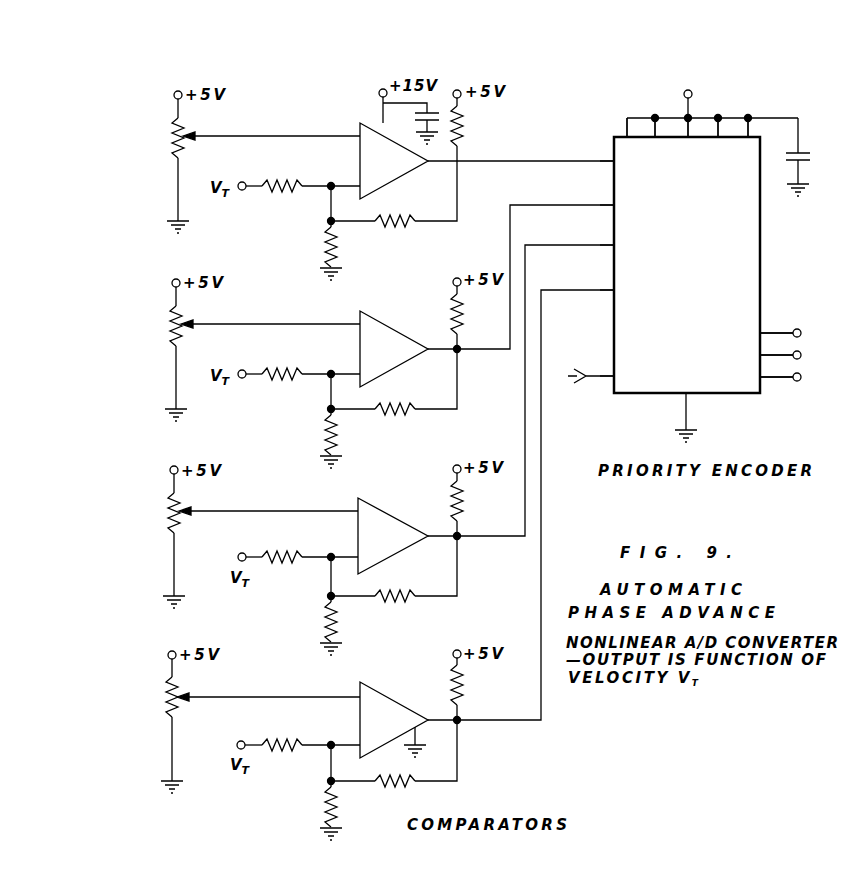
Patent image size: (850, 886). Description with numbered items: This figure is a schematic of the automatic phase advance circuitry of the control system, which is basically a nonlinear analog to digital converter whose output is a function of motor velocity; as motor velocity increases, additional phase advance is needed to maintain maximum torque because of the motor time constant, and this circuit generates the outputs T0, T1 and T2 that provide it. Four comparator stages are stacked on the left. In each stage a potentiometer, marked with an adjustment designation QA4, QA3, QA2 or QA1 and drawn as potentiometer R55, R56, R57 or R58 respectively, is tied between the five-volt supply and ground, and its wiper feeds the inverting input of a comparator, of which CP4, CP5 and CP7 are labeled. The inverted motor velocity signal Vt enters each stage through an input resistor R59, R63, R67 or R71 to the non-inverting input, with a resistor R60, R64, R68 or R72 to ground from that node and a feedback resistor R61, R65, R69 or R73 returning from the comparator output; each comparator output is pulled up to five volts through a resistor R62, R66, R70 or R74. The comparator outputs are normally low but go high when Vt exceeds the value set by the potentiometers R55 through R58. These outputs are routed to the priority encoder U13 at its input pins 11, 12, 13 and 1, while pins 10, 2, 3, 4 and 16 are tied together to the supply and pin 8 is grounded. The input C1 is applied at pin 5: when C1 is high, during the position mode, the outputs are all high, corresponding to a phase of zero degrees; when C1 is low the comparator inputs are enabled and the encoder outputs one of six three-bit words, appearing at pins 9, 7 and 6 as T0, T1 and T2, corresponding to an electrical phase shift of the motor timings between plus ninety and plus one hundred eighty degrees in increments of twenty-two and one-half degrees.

The adjustment potentiometer QA4 is at (234, 162).
The adjustment potentiometer QA3 is at (234, 350).
The adjustment potentiometer QA2 is at (233, 537).
The adjustment potentiometer QA1 is at (235, 722).
The potentiometer R55 is at (263, 162).
The potentiometer R56 is at (262, 350).
The potentiometer R57 is at (260, 537).
The potentiometer R58 is at (260, 722).
The input resistor R59 is at (299, 176).
The resistor R60 is at (312, 250).
The feedback resistor R61 is at (394, 202).
The pull-up resistor R62 is at (481, 125).
The input resistor R63 is at (299, 364).
The resistor R64 is at (311, 438).
The feedback resistor R65 is at (394, 391).
The pull-up resistor R66 is at (436, 313).
The input resistor R67 is at (298, 548).
The resistor R68 is at (310, 625).
The feedback resistor R69 is at (394, 579).
The pull-up resistor R70 is at (480, 500).
The input resistor R71 is at (298, 736).
The resistor R72 is at (310, 810).
The feedback resistor R73 is at (394, 765).
The pull-up resistor R74 is at (480, 685).
The comparator CP4 is at (394, 161).
The comparator CP5 is at (394, 349).
The comparator CP7 is at (394, 720).
The priority encoder U13 is at (705, 262).
The input C1 is at (587, 387).
The output T0 is at (791, 334).
The output T1 is at (791, 356).
The output T2 is at (791, 378).
The U13 pin 10 is at (627, 136).
The U13 pin 2 is at (654, 136).
The U13 pin 3 is at (687, 136).
The U13 pin 4 is at (716, 136).
The U13 pin 16 is at (747, 136).
The U13 pin 11 is at (620, 165).
The U13 pin 12 is at (619, 207).
The U13 pin 13 is at (619, 245).
The U13 pin 1 is at (615, 291).
The U13 pin 5 is at (614, 378).
The U13 pin 8 is at (686, 410).
The U13 pin 9 is at (771, 335).
The U13 pin 7 is at (771, 357).
The U13 pin 6 is at (771, 379).